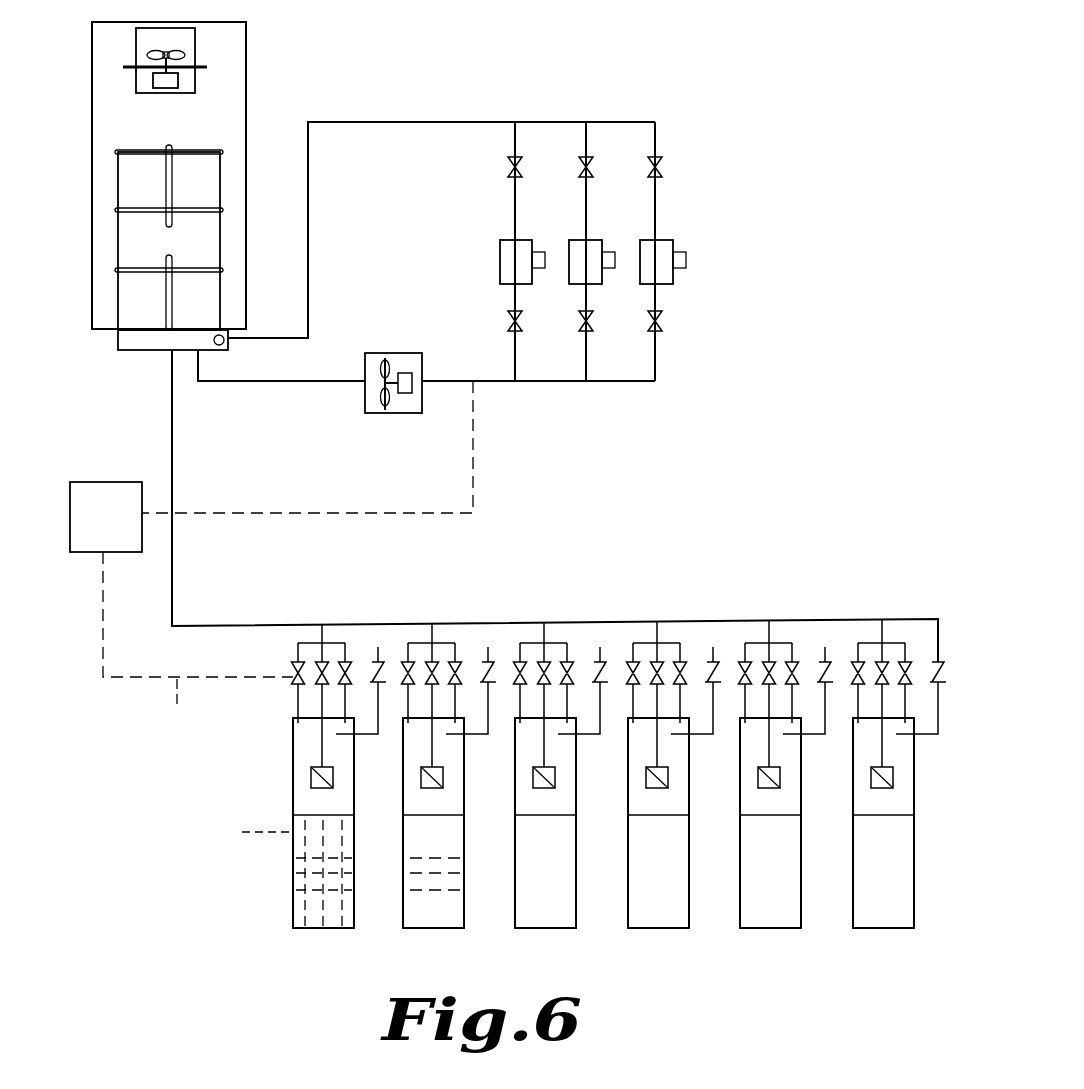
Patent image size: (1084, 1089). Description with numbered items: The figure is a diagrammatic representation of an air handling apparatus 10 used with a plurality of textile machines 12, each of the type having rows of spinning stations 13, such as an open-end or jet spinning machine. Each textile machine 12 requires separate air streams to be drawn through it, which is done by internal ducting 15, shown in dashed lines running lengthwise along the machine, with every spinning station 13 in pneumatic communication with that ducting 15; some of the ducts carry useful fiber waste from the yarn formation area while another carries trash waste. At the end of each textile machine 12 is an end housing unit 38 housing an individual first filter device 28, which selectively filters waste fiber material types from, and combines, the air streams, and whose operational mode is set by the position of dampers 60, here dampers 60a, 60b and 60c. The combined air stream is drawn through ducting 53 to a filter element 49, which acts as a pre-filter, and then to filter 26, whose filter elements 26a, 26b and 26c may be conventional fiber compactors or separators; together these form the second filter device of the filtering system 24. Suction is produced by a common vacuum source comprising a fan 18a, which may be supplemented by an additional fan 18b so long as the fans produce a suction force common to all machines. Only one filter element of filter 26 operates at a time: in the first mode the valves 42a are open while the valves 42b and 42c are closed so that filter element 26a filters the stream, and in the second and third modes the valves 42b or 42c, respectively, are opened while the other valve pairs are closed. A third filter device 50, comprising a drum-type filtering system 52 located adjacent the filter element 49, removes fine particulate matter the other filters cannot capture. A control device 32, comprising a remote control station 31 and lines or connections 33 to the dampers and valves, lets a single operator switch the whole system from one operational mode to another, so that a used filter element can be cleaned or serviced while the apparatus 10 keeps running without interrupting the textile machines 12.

The air handling apparatus 10 is at (258, 974).
The textile machine 12 is at (293, 918).
The spinning station 13 is at (293, 873).
The internal ducting 15 is at (252, 832).
The fan 18a is at (179, 95).
The additional fan 18b is at (410, 413).
The filtering system 24 is at (683, 94).
The filter 26 is at (452, 242).
The filter element 26a is at (500, 270).
The filter element 26b is at (592, 240).
The filter element 26c is at (673, 240).
The first filter device 28 is at (310, 780).
The remote control station 31 is at (130, 482).
The control device 32 is at (88, 612).
The lines or connections 33 is at (284, 478).
The end housing unit 38 is at (293, 740).
The valve 42a is at (508, 178).
The valve 42b is at (584, 158).
The valve 42c is at (662, 168).
The filter element 49 is at (160, 350).
The third filter device 50 is at (92, 147).
The drum-type filtering system 52 is at (118, 187).
The ducting 53 is at (313, 643).
The dampers 60 is at (468, 650).
The damper 60a is at (296, 680).
The damper 60b is at (322, 660).
The damper 60c is at (346, 660).